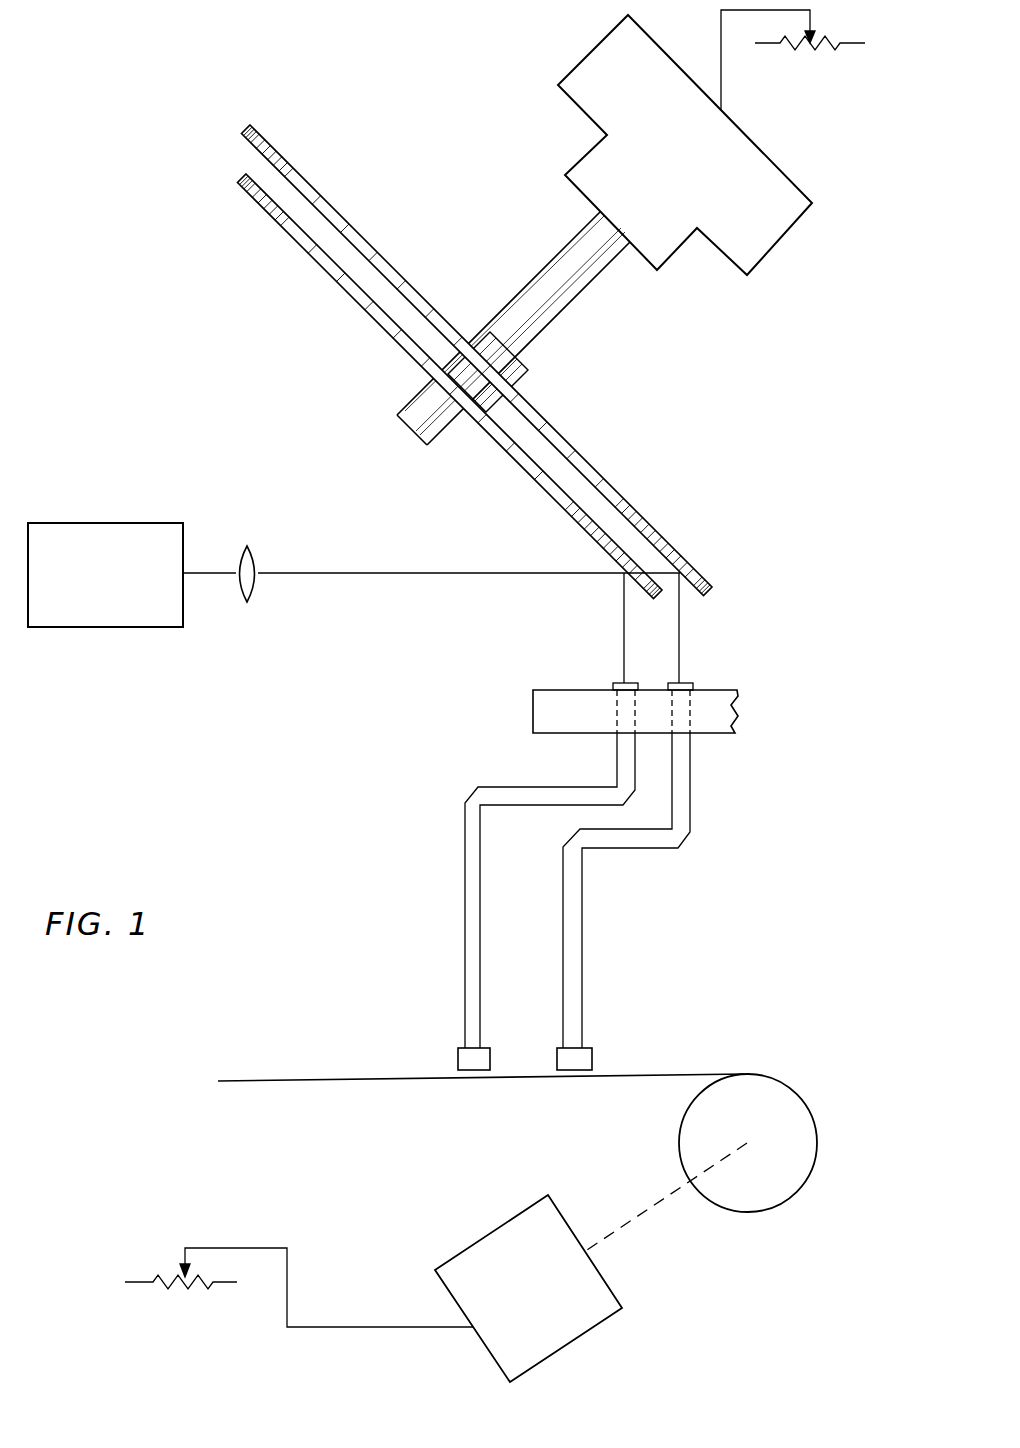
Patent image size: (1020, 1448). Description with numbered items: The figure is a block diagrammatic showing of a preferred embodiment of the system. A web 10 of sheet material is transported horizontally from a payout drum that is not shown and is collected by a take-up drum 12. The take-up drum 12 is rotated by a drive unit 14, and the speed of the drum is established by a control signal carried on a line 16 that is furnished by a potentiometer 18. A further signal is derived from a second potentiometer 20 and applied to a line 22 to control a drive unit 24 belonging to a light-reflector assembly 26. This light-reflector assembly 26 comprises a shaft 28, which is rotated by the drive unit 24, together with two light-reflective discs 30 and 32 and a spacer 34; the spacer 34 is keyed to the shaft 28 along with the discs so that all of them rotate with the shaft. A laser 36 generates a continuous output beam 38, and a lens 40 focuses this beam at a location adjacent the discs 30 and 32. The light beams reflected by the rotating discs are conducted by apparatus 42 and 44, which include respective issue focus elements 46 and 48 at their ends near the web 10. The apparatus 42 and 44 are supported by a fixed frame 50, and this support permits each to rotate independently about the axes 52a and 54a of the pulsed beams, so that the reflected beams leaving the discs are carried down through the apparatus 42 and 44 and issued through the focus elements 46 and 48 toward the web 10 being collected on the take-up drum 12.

The web 10 is at (315, 1075).
The take-up drum 12 is at (790, 1180).
The drive unit 14 is at (495, 1240).
The line 16 is at (372, 1327).
The potentiometer 18 is at (190, 1290).
The potentiometer 20 is at (815, 50).
The line 22 is at (725, 92).
The drive unit 24 is at (600, 62).
The light-reflector assembly 26 is at (437, 226).
The shaft 28 is at (540, 318).
The light-reflective disc 30 is at (293, 232).
The light-reflective disc 32 is at (608, 497).
The spacer 34 is at (435, 345).
The laser 36 is at (113, 523).
The output beam 38 is at (410, 580).
The lens 40 is at (257, 548).
The apparatus 42 is at (465, 862).
The apparatus 44 is at (583, 898).
The issue focus element 46 is at (488, 1060).
The issue focus element 48 is at (590, 1060).
The fixed frame 50 is at (533, 715).
The axis 52a is at (624, 637).
The axis 54a is at (680, 637).